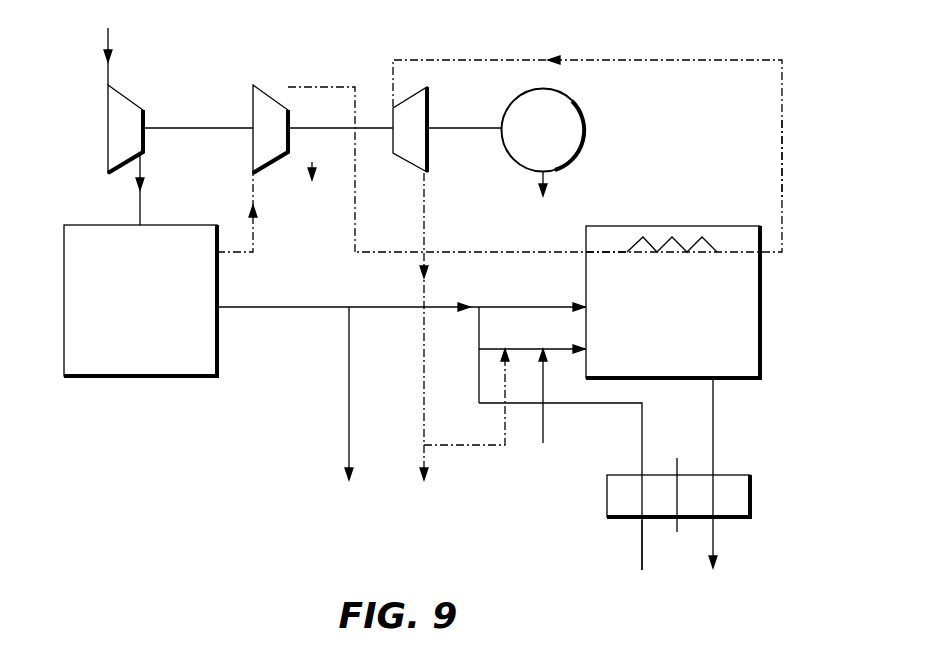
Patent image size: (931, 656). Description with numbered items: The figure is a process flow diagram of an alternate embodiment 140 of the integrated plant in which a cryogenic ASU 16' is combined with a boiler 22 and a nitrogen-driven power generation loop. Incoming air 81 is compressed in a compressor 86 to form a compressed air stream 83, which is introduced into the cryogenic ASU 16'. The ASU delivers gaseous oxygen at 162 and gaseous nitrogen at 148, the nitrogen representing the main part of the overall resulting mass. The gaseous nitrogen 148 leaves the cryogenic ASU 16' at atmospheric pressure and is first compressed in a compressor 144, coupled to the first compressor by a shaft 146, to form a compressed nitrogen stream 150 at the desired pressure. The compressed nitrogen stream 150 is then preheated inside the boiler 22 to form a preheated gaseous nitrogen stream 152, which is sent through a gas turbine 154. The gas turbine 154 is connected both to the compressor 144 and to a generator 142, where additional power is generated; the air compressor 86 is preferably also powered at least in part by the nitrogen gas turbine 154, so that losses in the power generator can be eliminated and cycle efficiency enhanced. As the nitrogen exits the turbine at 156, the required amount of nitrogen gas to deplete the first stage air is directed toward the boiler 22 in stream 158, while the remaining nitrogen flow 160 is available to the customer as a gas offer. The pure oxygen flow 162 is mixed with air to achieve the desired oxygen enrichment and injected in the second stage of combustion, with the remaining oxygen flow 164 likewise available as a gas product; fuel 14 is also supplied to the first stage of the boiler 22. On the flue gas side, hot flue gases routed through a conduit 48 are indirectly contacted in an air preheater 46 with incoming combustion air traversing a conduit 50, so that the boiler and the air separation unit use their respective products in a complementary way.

The incoming air 81 is at (110, 42).
The compressor 86 is at (107, 112).
The compressor shaft 146 is at (175, 125).
The compressor 144 is at (262, 90).
The compressed air stream 83 is at (138, 208).
The gaseous nitrogen stream 148 is at (250, 182).
The compressed nitrogen stream 150 is at (314, 86).
The alternate embodiment 140 is at (664, 38).
The preheated gaseous nitrogen stream 152 is at (783, 152).
The gas turbine 154 is at (432, 92).
The generator 142 is at (572, 162).
The turbine exit nitrogen 156 is at (425, 240).
The cryogenic ASU 16' is at (133, 316).
The gaseous oxygen stream 162 is at (263, 308).
The remaining oxygen flow 164 is at (347, 420).
The remaining nitrogen flow 160 is at (427, 461).
The nitrogen stream to boiler 158 is at (505, 447).
The fuel 14 is at (545, 420).
The boiler 22 is at (753, 330).
The flue gas conduit 48 is at (715, 432).
The air preheater 46 is at (728, 521).
The combustion air conduit 50 is at (641, 543).